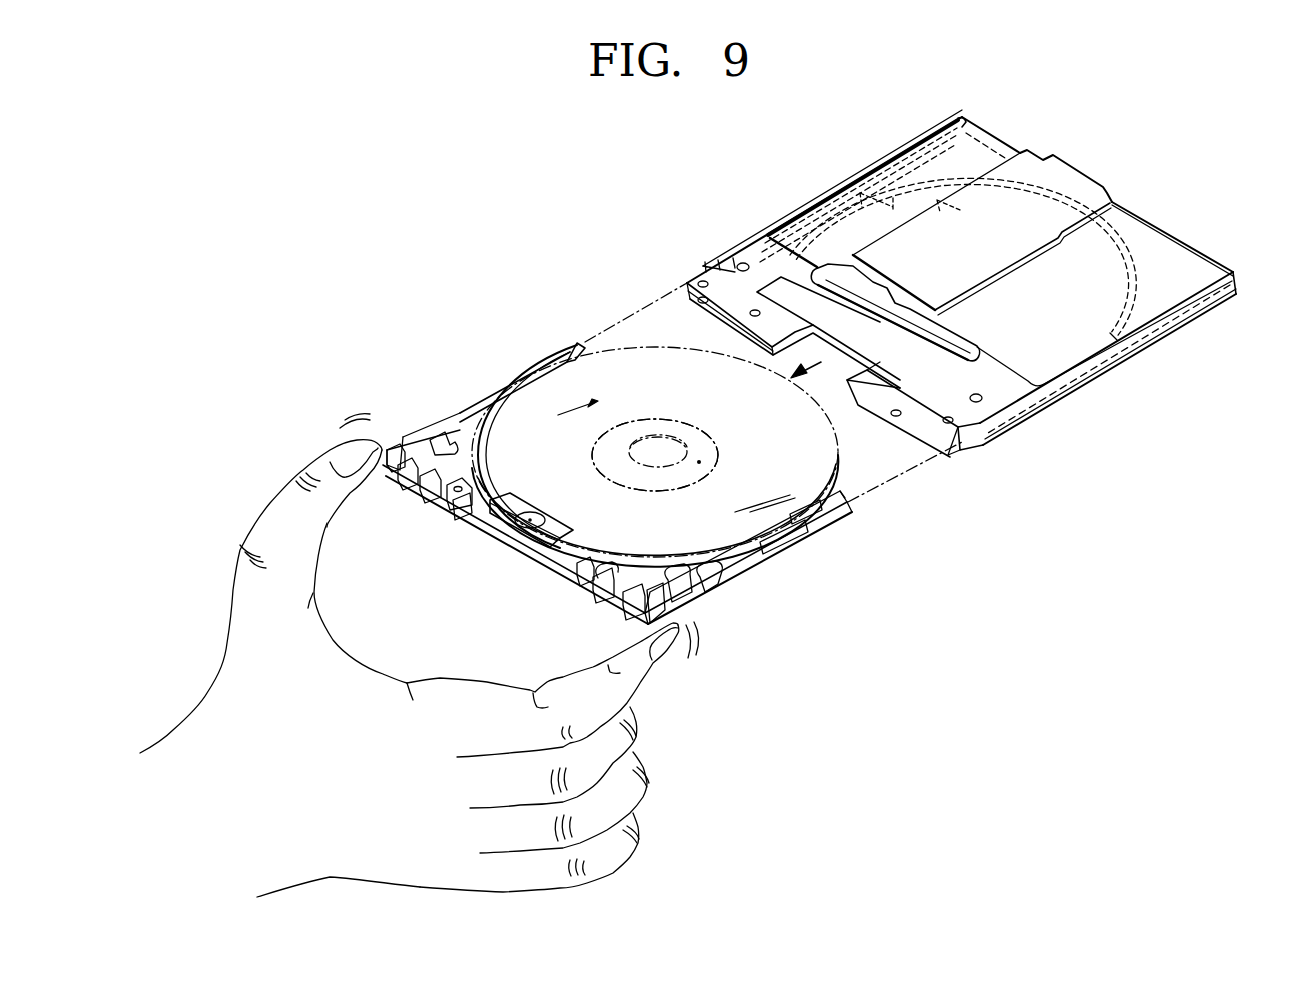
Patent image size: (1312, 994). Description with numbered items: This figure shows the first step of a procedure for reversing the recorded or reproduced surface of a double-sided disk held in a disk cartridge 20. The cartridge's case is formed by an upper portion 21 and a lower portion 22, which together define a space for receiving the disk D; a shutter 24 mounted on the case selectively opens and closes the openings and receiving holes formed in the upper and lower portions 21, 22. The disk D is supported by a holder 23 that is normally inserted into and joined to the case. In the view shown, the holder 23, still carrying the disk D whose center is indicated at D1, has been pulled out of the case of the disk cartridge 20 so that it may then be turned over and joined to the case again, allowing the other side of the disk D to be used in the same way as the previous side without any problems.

The disk cartridge 20 is at (830, 141).
The upper portion 21 is at (1238, 280).
The lower portion 22 is at (1238, 298).
The holder 23 is at (767, 569).
The shutter 24 is at (1077, 176).
The disk D is at (840, 463).
The disk center hole D1 is at (647, 426).